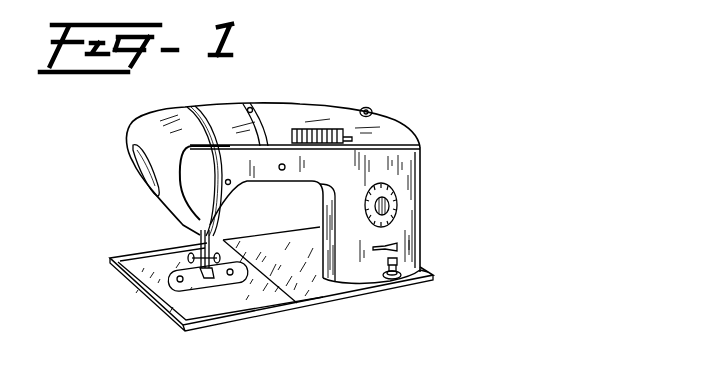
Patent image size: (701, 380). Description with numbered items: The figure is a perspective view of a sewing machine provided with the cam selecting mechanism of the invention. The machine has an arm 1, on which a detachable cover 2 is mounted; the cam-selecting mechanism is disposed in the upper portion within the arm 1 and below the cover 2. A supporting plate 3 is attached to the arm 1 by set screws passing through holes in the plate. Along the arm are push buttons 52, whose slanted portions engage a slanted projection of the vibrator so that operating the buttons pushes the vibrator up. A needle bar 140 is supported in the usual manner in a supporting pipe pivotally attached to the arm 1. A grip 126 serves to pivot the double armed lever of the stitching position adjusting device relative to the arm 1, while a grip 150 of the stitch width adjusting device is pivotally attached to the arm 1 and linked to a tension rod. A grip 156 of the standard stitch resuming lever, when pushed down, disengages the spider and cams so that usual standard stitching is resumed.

The arm 1 is at (272, 168).
The detachable cover 2 is at (340, 113).
The supporting plate 3 is at (421, 143).
The push buttons 52 is at (316, 144).
The grip 126 is at (397, 247).
The needle bar 140 is at (200, 233).
The grip 150 is at (397, 201).
The grip 156 is at (352, 138).